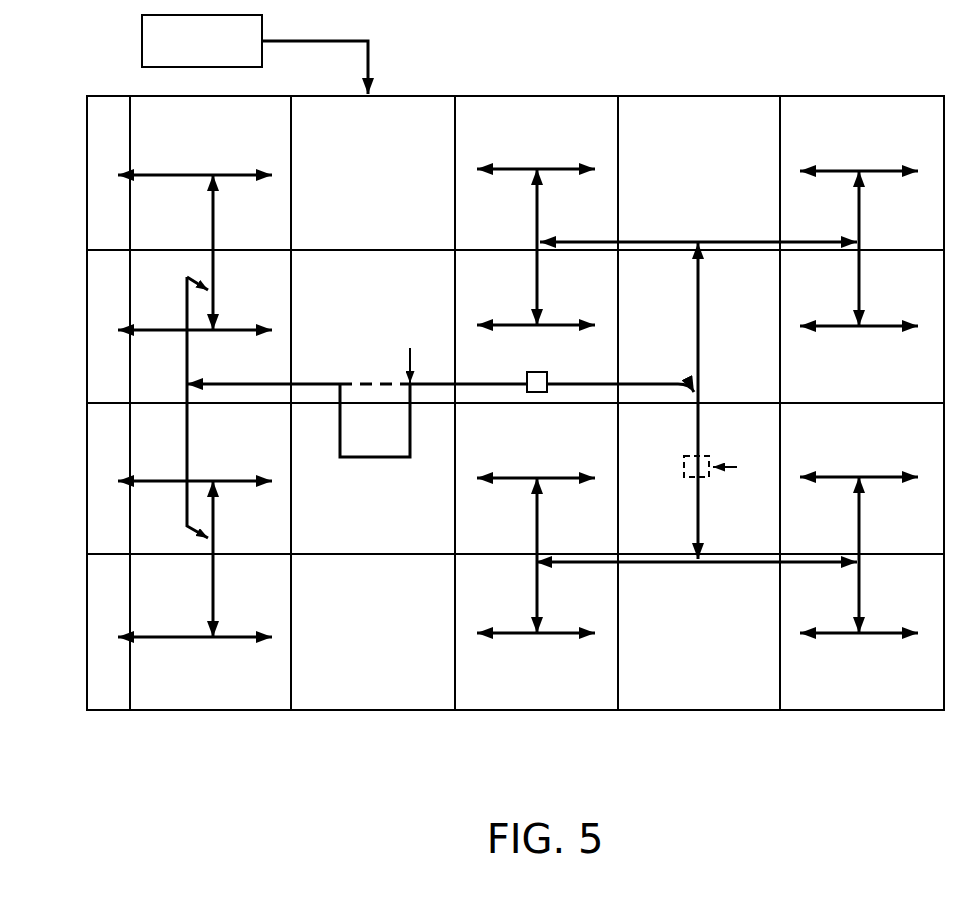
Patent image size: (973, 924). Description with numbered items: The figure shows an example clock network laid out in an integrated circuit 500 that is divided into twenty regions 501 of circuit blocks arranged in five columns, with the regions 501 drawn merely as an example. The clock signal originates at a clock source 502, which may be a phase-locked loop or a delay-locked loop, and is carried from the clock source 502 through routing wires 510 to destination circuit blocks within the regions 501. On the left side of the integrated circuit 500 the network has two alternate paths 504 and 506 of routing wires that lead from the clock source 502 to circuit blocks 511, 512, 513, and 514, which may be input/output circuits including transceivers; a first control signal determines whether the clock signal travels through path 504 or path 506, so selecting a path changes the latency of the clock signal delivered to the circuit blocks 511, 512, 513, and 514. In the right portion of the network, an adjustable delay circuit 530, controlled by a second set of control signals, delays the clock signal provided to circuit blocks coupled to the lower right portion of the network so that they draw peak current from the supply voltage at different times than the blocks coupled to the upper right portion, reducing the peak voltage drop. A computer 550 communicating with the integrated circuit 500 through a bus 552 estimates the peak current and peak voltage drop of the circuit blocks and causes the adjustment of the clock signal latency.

The integrated circuit 500 is at (753, 96).
The regions 501 is at (206, 718).
The clock source 502 is at (547, 372).
The alternate path 504 is at (375, 457).
The alternate path 506 is at (370, 382).
The routing wires 510 is at (165, 173).
The circuit block 511 is at (93, 183).
The circuit block 512 is at (93, 322).
The circuit block 513 is at (93, 458).
The circuit block 514 is at (93, 598).
The adjustable delay circuit 530 is at (693, 478).
The computer 550 is at (142, 38).
The bus 552 is at (307, 39).